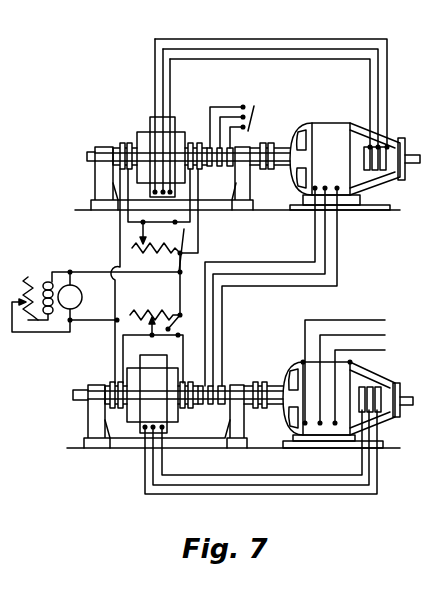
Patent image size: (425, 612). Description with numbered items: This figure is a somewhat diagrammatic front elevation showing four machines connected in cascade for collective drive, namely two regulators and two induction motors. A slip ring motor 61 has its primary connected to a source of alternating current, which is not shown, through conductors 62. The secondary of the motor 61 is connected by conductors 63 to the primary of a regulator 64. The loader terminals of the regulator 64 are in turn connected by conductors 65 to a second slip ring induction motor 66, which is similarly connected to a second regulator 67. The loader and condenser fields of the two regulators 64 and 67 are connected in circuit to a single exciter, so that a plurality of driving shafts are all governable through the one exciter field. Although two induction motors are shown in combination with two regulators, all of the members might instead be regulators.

The slip ring motor 61 is at (362, 368).
The conductors 62 is at (361, 341).
The conductors 63 is at (295, 472).
The regulator 64 is at (152, 364).
The conductors 65 is at (262, 268).
The second slip ring induction motor 66 is at (333, 131).
The second regulator 67 is at (153, 120).